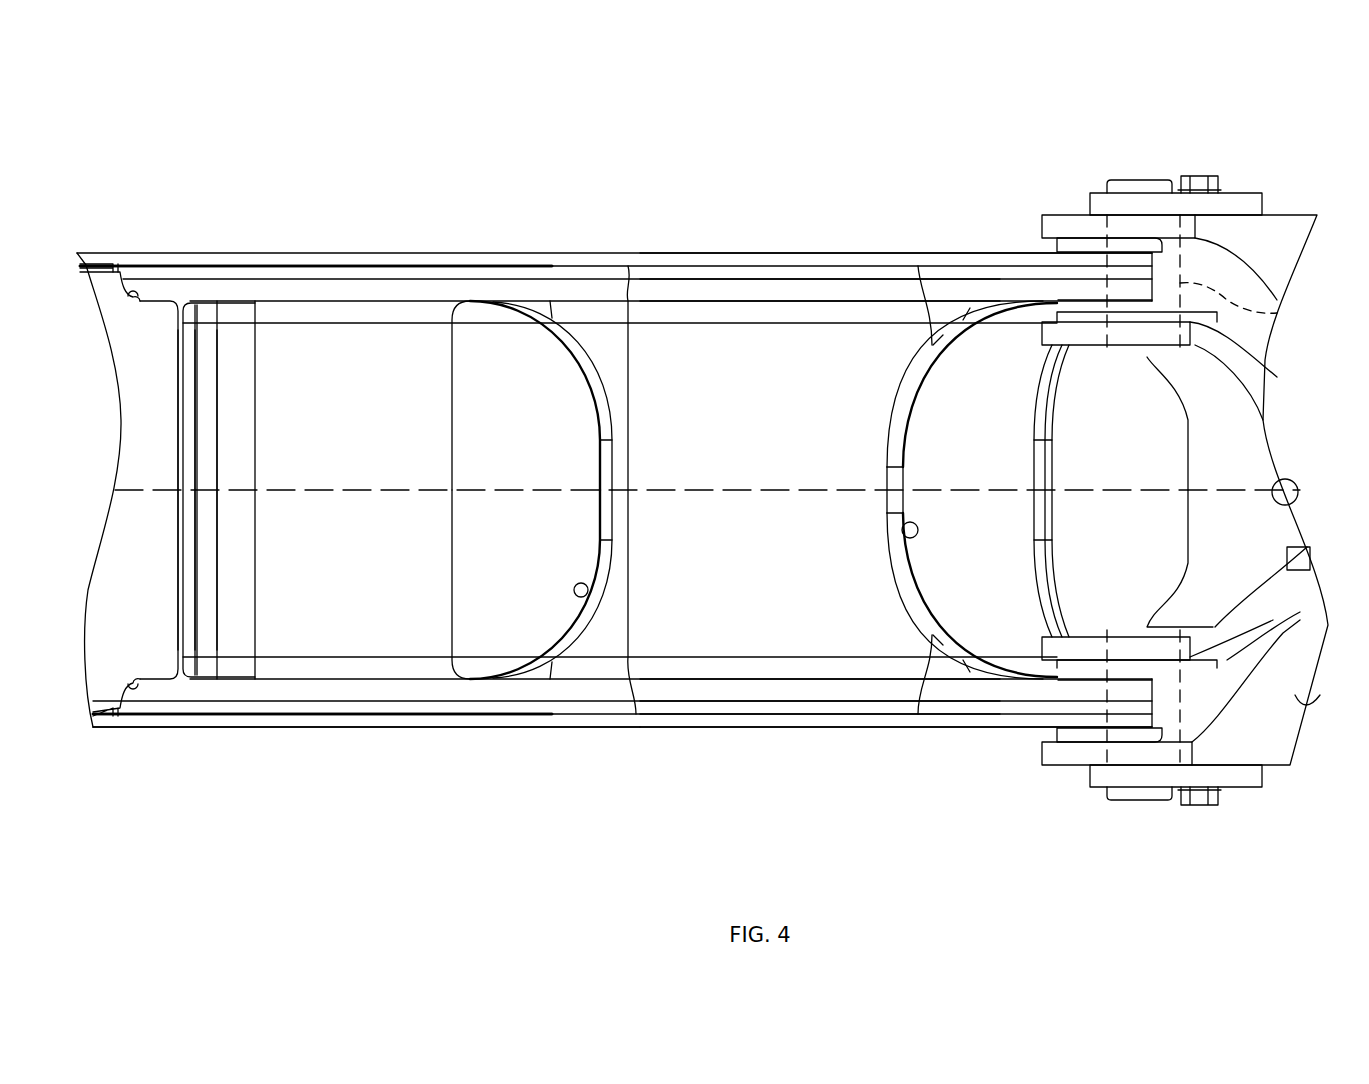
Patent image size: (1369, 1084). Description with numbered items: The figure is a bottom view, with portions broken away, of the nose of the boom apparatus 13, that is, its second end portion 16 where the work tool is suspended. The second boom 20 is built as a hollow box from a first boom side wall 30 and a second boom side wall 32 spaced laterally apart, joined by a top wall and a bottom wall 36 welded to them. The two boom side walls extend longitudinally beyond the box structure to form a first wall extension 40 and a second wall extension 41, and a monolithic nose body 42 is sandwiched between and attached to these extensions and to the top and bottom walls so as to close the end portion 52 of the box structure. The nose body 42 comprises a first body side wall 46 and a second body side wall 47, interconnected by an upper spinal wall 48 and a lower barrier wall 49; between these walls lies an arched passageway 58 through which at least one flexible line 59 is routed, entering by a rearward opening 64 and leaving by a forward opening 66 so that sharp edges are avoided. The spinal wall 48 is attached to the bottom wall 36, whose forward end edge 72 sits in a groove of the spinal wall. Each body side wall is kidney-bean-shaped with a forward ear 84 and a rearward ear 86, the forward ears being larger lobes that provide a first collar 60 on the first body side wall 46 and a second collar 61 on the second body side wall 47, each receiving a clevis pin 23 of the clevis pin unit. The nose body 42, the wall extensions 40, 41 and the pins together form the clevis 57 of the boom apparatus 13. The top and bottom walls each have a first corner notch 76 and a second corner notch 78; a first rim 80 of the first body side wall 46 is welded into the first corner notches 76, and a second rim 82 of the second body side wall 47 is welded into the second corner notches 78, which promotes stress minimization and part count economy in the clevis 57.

The boom apparatus 13 is at (177, 155).
The second end portion 16 is at (152, 216).
The second boom 20 is at (564, 230).
The clevis pin 23 is at (1277, 313).
The first boom side wall 30 is at (222, 232).
The second boom side wall 32 is at (333, 742).
The bottom wall 36 is at (157, 425).
The first wall extension 40 is at (822, 253).
The second wall extension 41 is at (795, 730).
The nose body 42 is at (705, 670).
The first body side wall 46 is at (725, 290).
The second body side wall 47 is at (790, 668).
The spinal wall 48 is at (562, 398).
The barrier wall 49 is at (648, 458).
The end portion 52 is at (148, 563).
The clevis 57 is at (1192, 250).
The passageway 58 is at (577, 522).
The flexible line 59 is at (532, 536).
The first collar 60 is at (1147, 300).
The second collar 61 is at (1147, 650).
The rearward opening 64 is at (590, 585).
The forward opening 66 is at (903, 532).
The forward end edge 72 is at (183, 488).
The first corner notch 76 is at (137, 297).
The second corner notch 78 is at (127, 690).
The first rim 80 is at (800, 290).
The second rim 82 is at (732, 668).
The forward ear 84 is at (1077, 273).
The rearward ear 86 is at (335, 258).